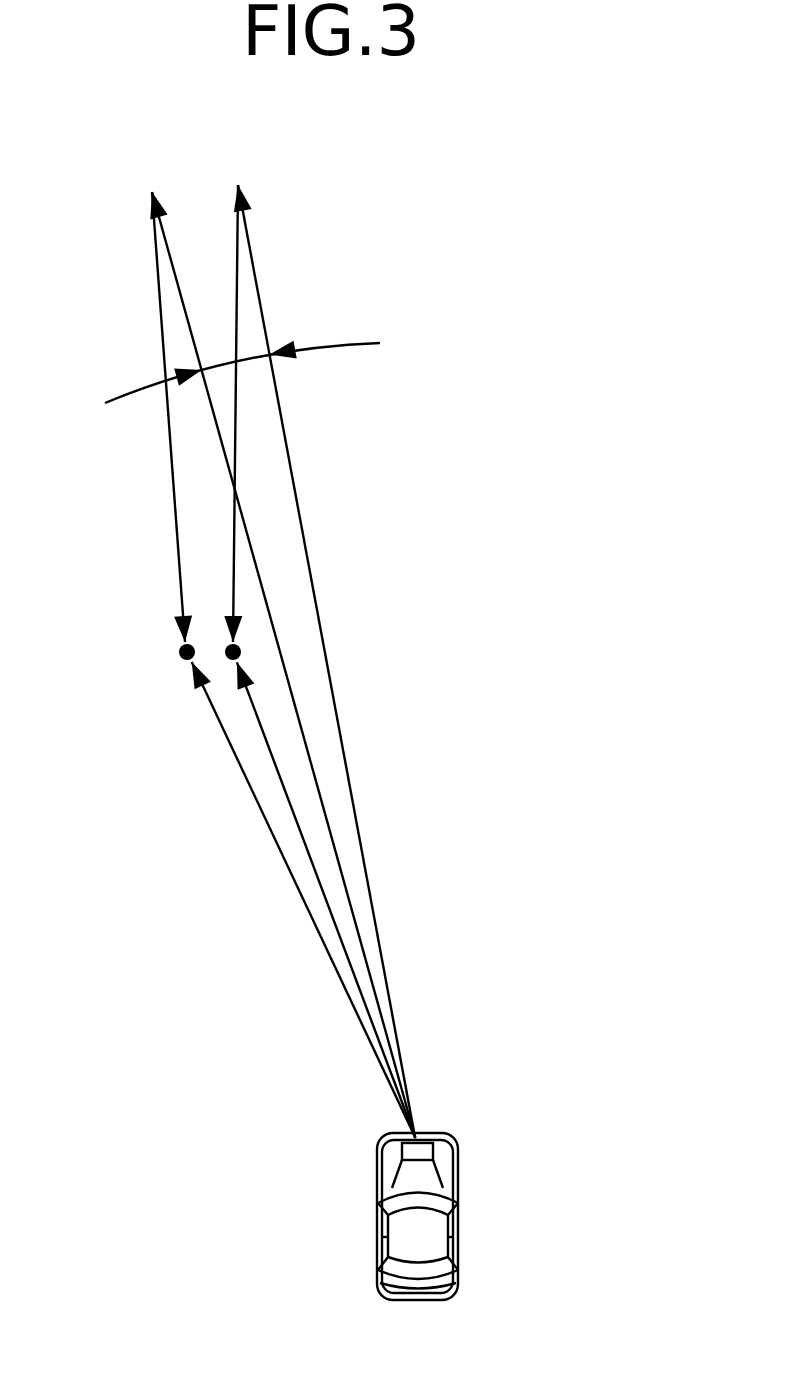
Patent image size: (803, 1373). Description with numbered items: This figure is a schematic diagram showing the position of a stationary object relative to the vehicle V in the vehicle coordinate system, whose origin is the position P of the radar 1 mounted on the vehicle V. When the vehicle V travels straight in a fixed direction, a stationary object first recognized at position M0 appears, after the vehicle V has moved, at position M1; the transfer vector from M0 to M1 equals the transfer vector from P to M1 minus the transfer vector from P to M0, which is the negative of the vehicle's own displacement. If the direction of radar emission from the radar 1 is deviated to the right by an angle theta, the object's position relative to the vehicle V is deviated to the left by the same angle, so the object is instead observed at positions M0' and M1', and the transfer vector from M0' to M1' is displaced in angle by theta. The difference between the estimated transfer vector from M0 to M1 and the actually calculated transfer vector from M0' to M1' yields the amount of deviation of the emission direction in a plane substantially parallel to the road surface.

The radar 1 is at (402, 1147).
The vehicle V is at (382, 1250).
The position of the radar P is at (431, 1111).
The first object position M0 is at (279, 403).
The first deviated object position M0' is at (124, 403).
The second object position M1 is at (265, 653).
The second deviated object position M1' is at (146, 653).